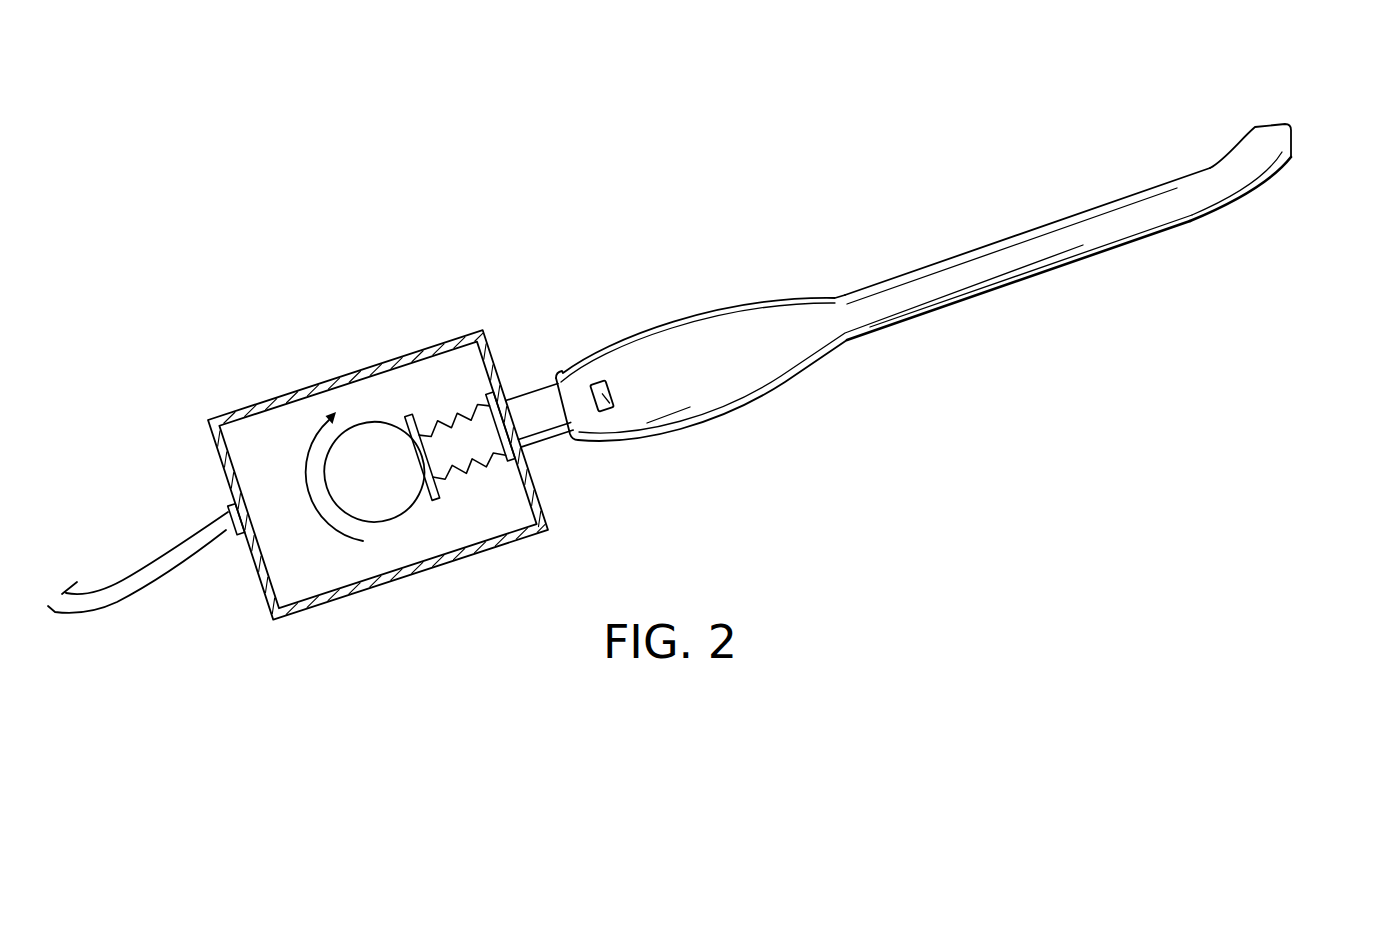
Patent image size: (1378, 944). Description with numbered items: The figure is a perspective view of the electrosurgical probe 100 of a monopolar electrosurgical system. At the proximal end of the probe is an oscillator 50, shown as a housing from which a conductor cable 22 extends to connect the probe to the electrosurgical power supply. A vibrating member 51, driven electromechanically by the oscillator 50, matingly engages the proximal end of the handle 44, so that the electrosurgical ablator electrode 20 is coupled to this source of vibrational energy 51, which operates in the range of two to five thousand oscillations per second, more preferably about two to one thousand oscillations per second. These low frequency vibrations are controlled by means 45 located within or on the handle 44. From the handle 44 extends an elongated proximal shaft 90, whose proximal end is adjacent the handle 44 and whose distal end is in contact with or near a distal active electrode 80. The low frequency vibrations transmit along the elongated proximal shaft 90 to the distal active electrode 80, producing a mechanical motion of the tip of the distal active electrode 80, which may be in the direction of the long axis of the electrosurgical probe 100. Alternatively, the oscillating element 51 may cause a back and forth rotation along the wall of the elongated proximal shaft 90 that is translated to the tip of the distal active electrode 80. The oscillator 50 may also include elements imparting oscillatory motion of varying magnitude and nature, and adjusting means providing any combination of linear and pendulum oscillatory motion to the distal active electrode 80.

The electrosurgical probe 100 is at (761, 185).
The electrosurgical electrode 20 is at (912, 240).
The conductor cable 22 is at (125, 580).
The handle 44 is at (660, 348).
The means for controlling vibrations 45 is at (610, 410).
The oscillator 50 is at (357, 370).
The vibrating member 51 is at (537, 403).
The distal active electrode 80 is at (1263, 157).
The elongated proximal shaft 90 is at (882, 303).